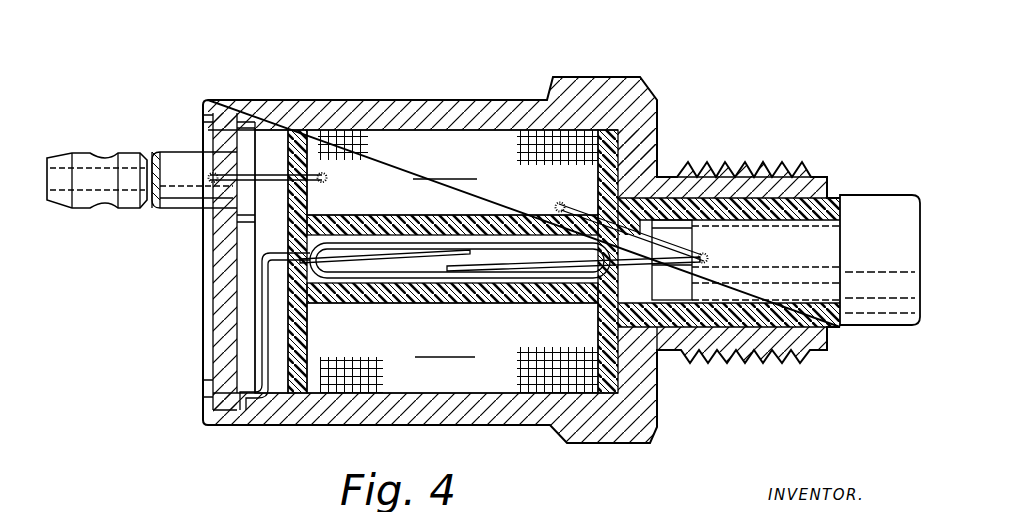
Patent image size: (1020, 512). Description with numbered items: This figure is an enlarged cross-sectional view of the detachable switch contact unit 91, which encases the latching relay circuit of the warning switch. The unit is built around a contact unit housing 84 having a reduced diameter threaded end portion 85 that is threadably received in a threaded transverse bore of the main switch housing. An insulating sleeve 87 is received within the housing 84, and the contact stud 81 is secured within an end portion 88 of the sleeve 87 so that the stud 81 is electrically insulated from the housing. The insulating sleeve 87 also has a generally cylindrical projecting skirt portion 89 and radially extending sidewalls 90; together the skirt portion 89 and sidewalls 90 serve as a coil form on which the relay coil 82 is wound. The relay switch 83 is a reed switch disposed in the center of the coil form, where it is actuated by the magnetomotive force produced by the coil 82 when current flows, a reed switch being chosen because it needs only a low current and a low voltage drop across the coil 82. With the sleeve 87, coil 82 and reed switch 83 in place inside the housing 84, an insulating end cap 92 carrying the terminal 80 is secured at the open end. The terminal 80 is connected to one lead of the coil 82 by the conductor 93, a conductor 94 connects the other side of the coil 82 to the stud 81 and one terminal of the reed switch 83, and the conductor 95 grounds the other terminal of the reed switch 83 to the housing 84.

The terminal 80 is at (126, 150).
The contact stud 81 is at (872, 212).
The relay coil 82 is at (398, 147).
The relay switch 83 is at (417, 286).
The contact unit housing 84 is at (480, 103).
The reduced diameter threaded end portion 85 is at (736, 164).
The insulating sleeve 87 is at (278, 144).
The end portion of the sleeve 88 is at (792, 214).
The projecting skirt portion 89 is at (423, 222).
The sidewalls 90 is at (618, 144).
The detachable switch contact unit 91 is at (588, 78).
The insulating end cap 92 is at (212, 300).
The conductor 93 is at (258, 175).
The conductor 94 is at (706, 256).
The conductor 95 is at (262, 256).